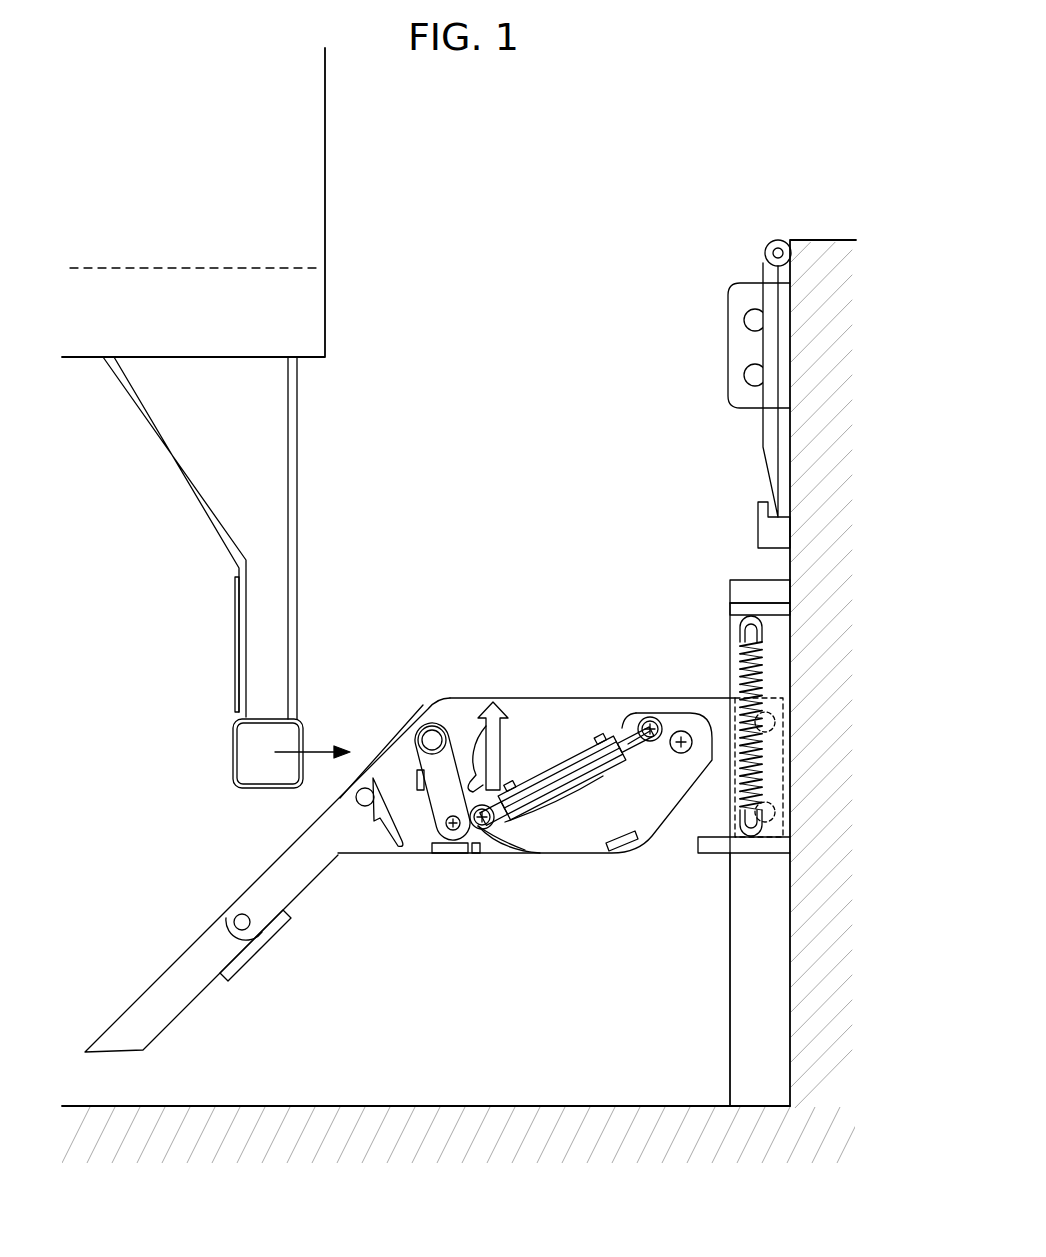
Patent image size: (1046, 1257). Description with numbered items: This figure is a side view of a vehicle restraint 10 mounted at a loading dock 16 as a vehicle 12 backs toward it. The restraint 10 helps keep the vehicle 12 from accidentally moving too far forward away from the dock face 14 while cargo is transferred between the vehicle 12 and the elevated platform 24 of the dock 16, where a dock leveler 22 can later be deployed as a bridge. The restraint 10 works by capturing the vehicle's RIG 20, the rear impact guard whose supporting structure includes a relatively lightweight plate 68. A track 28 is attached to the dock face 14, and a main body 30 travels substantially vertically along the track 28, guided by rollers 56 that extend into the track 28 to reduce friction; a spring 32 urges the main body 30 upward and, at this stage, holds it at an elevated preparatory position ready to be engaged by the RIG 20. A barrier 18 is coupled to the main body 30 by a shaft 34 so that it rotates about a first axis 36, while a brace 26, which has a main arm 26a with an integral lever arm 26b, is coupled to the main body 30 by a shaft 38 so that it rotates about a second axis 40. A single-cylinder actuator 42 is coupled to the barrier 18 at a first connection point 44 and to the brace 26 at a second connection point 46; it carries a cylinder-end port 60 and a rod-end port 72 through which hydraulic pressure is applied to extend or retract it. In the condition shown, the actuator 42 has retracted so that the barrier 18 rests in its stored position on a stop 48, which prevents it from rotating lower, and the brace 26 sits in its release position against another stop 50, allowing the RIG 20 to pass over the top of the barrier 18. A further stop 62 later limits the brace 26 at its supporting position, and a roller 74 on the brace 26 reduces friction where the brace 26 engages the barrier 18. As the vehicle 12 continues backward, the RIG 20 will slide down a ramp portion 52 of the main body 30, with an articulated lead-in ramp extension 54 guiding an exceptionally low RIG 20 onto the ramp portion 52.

The vehicle restraint 10 is at (380, 585).
The vehicle 12 is at (230, 740).
The dock face 14 is at (786, 1000).
The loading dock 16 is at (594, 1006).
The barrier 18 is at (478, 705).
The RIG 20 is at (175, 462).
The dock leveler 22 is at (800, 240).
The elevated platform 24 is at (818, 247).
The brace 26 is at (428, 822).
The main arm 26a is at (385, 836).
The lever arm 26b is at (478, 785).
The track 28 is at (730, 942).
The main body 30 is at (576, 700).
The spring 32 is at (742, 650).
The shaft 34 is at (690, 705).
The first axis 36 is at (678, 752).
The shaft 38 is at (450, 856).
The second axis 40 is at (453, 832).
The actuator 42 is at (570, 700).
The first connection point 44 is at (654, 722).
The second connection point 46 is at (503, 836).
The stop 48 is at (622, 845).
The stop 50 is at (417, 780).
The ramp portion 52 is at (412, 725).
The articulated lead-in ramp extension 54 is at (275, 845).
The rollers 56 is at (776, 726).
The cylinder-end port 60 is at (512, 778).
The stop 62 is at (490, 838).
The plate 68 is at (236, 605).
The rod-end port 72 is at (600, 720).
The roller 74 is at (440, 724).